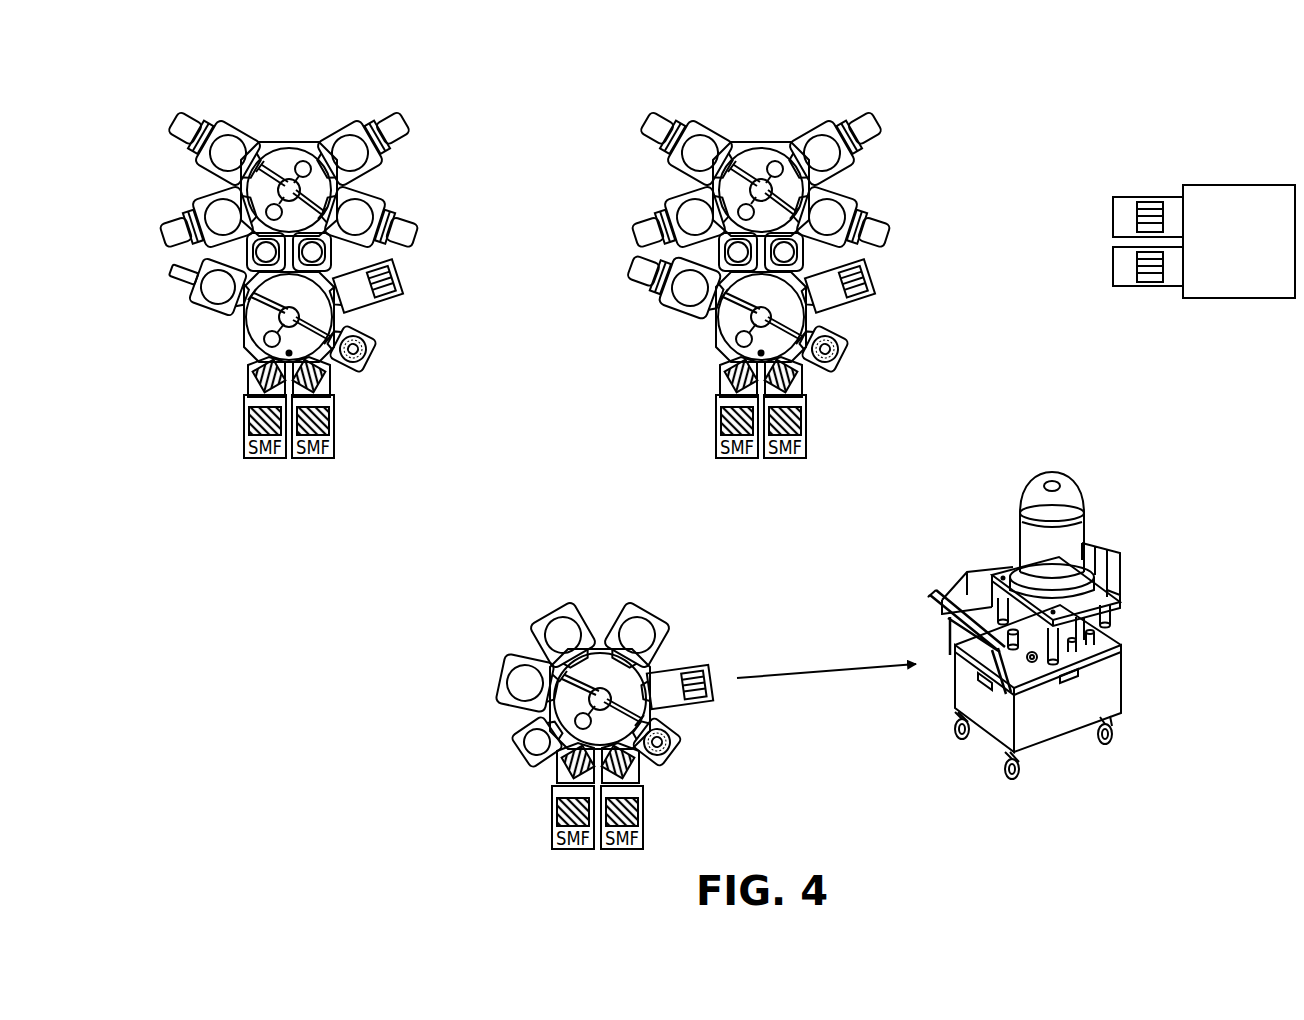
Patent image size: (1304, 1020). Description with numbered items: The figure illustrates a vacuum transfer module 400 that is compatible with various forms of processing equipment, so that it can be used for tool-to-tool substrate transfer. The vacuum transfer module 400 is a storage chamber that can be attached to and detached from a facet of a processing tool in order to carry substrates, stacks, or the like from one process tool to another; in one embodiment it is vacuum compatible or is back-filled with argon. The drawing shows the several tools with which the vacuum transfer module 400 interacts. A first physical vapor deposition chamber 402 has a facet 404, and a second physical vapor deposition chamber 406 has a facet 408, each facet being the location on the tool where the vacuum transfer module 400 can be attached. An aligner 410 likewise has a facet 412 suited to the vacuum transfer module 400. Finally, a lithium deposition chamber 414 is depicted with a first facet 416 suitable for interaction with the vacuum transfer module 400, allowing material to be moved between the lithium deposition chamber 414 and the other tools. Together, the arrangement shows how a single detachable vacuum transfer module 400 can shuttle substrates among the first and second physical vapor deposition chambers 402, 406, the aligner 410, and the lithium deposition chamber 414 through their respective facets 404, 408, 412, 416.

The vacuum transfer module 400 is at (1137, 495).
The first physical vapor deposition chamber 402 is at (407, 83).
The facet 404 is at (403, 276).
The second physical vapor deposition chamber 406 is at (863, 86).
The facet 408 is at (874, 276).
The aligner 410 is at (673, 597).
The facet 412 is at (722, 696).
The lithium deposition chamber 414 is at (1257, 252).
The first facet 416 is at (1113, 219).